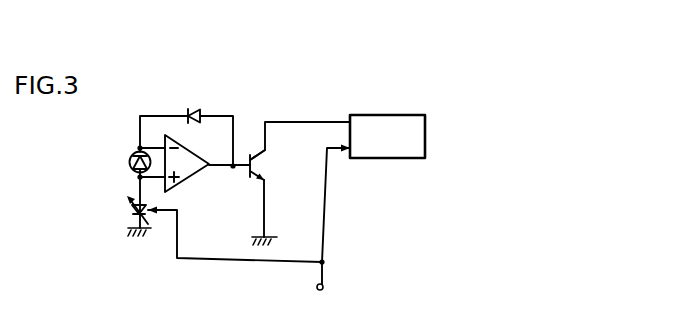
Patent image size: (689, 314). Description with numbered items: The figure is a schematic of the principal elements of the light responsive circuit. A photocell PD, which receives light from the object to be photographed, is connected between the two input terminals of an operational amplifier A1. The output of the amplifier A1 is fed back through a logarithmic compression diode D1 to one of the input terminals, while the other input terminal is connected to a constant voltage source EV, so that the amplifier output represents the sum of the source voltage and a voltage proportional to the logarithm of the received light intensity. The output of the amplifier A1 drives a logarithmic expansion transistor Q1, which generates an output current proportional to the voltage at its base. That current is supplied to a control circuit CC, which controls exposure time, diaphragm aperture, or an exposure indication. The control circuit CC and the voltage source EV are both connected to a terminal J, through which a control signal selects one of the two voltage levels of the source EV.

The logarithmic compression diode D1 is at (195, 112).
The photocell PD is at (128, 160).
The operational amplifier A1 is at (187, 173).
The logarithmic expansion transistor Q1 is at (250, 179).
The constant voltage source EV is at (127, 209).
The control circuit CC is at (388, 115).
The terminal J is at (324, 287).